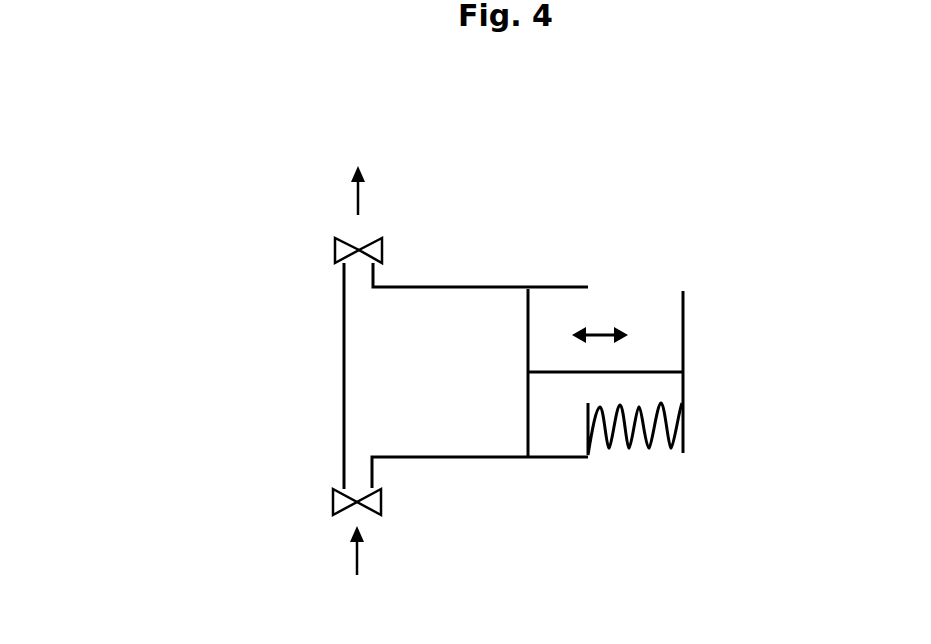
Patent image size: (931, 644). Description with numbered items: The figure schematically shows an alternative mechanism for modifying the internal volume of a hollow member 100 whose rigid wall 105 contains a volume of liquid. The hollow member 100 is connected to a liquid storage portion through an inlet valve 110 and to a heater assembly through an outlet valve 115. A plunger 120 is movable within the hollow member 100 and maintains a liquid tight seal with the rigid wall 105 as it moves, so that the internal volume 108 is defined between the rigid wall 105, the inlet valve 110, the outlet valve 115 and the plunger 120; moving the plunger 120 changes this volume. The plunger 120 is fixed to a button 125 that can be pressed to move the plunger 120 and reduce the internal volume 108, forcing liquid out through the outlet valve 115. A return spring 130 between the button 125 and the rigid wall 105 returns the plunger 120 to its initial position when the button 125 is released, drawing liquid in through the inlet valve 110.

The hollow member 100 is at (303, 388).
The rigid wall 105 is at (443, 287).
The internal volume 108 is at (480, 417).
The inlet valve 110 is at (332, 500).
The outlet valve 115 is at (336, 252).
The plunger 120 is at (528, 315).
The button 125 is at (683, 316).
The return spring 130 is at (662, 458).